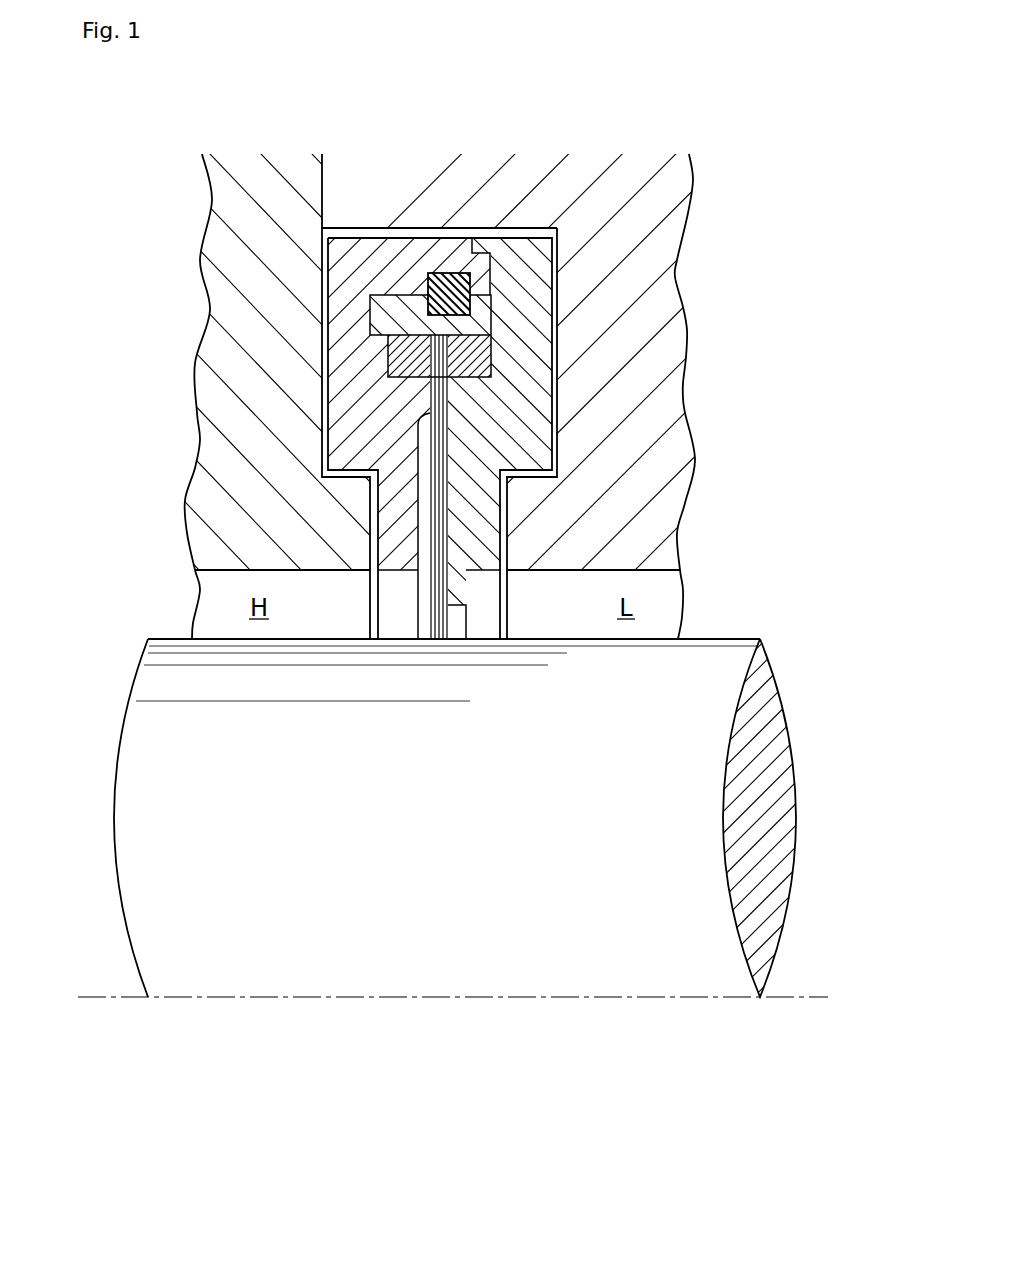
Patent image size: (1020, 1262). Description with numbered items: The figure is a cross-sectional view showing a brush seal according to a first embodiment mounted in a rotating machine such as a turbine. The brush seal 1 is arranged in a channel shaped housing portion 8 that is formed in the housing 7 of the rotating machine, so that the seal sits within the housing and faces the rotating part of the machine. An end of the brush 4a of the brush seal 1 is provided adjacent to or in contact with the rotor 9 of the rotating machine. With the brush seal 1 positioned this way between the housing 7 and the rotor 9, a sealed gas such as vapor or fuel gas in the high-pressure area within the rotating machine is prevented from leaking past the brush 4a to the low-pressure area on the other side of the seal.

The brush seal 1 is at (463, 372).
The brush 4a is at (441, 522).
The housing 7 is at (235, 301).
The housing portion 8 is at (427, 230).
The rotor 9 is at (661, 954).